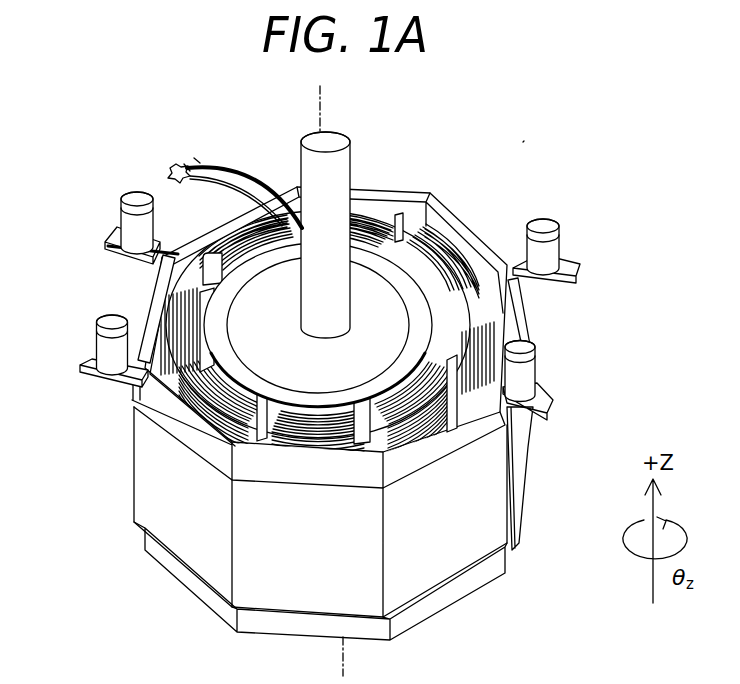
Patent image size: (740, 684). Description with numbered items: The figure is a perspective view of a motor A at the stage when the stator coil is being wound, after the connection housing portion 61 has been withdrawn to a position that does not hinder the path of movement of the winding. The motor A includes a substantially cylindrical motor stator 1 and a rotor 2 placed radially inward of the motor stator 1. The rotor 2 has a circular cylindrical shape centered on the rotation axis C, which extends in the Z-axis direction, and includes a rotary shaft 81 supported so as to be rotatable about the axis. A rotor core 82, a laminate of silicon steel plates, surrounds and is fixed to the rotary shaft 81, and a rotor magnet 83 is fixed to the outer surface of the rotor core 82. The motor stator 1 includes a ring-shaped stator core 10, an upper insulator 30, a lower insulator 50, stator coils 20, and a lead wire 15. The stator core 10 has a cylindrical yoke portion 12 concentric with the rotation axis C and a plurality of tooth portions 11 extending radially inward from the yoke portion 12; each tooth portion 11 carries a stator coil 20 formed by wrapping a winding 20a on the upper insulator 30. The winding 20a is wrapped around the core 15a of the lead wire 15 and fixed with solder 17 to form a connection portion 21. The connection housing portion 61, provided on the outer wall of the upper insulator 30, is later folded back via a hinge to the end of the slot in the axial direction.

The motor stator 1 is at (447, 192).
The rotor 2 is at (342, 290).
The stator core 10 is at (288, 390).
The tooth portion 11 is at (480, 240).
The yoke portion 12 is at (142, 478).
The lead wire 15 is at (233, 170).
The core of the lead wire 15a is at (192, 163).
The solder 17 is at (180, 172).
The stator coil 20 is at (213, 242).
The winding 20a is at (170, 180).
The connection portion 21 is at (205, 151).
The upper insulator 30 is at (163, 405).
The lower insulator 50 is at (182, 573).
The connection housing portion 61 is at (96, 218).
The rotary shaft 81 is at (348, 160).
The rotor core 82 is at (273, 330).
The rotor magnet 83 is at (437, 307).
The motor A is at (533, 143).
The rotation axis C is at (318, 93).